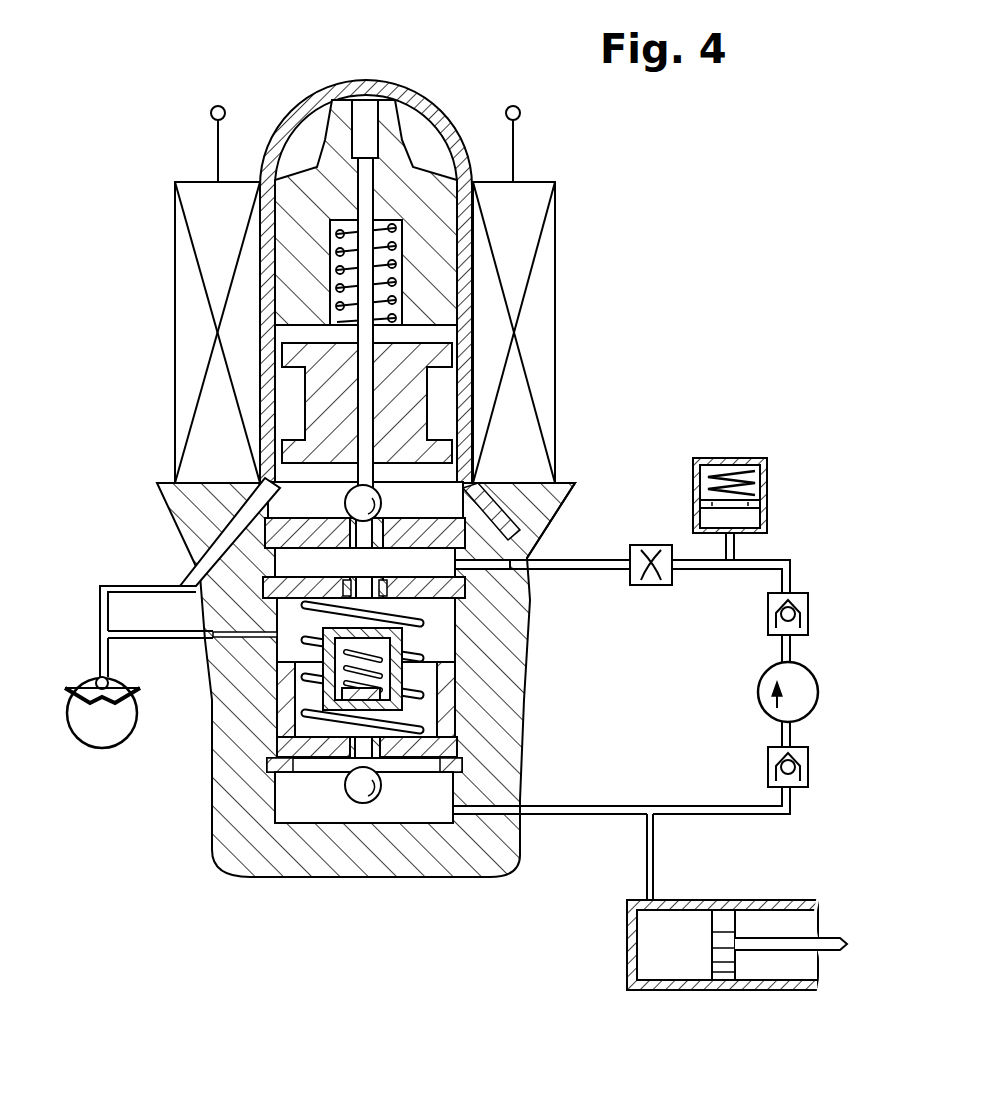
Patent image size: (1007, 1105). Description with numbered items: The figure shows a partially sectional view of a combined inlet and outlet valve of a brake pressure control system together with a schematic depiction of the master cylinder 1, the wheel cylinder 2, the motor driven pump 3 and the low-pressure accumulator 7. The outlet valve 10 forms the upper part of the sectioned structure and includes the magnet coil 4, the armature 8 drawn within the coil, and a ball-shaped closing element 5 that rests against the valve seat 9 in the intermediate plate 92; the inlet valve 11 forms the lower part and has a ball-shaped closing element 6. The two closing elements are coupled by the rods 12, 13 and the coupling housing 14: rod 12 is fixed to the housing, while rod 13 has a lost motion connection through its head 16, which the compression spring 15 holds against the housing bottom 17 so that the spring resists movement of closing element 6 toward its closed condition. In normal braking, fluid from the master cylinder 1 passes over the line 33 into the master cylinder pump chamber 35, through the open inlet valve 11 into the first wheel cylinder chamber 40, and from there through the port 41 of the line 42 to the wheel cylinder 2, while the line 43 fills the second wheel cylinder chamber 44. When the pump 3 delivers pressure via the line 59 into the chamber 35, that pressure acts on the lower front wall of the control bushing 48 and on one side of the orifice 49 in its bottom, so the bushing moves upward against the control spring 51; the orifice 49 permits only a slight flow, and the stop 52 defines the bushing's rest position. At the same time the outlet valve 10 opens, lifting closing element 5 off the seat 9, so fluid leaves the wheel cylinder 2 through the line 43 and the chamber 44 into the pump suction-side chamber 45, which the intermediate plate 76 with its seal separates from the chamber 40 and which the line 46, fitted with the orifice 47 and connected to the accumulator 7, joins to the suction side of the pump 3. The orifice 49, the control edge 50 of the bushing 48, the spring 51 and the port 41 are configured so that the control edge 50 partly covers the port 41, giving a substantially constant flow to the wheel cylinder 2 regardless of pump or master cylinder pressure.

The master cylinder 1 is at (772, 900).
The wheel cylinder 2 is at (96, 677).
The motor driven pump 3 is at (803, 703).
The magnet coil 4 is at (545, 240).
The closing element 5 is at (478, 485).
The closing element 6 is at (357, 795).
The low-pressure accumulator 7 is at (765, 470).
The armature 8 is at (410, 385).
The valve seat 9 is at (445, 515).
The outlet valve 10 is at (340, 505).
The inlet valve 11 is at (380, 768).
The rod 12 is at (197, 577).
The rod 13 is at (452, 720).
The coupling housing 14 is at (405, 672).
The compression spring 15 is at (402, 640).
The head 16 is at (395, 693).
The housing bottom 17 is at (330, 720).
The line 33 is at (655, 862).
The master cylinder pump chamber 35 is at (330, 805).
The first wheel cylinder chamber 40 is at (478, 592).
The port 41 is at (217, 660).
The line 42 is at (140, 632).
The line 43 is at (118, 585).
The second wheel cylinder chamber 44 is at (400, 497).
The pump suction-side chamber 45 is at (455, 557).
The line 46 is at (693, 572).
The orifice 47 is at (650, 583).
The control bushing 48 is at (447, 732).
The orifice 49 is at (408, 765).
The control edge 50 is at (273, 683).
The control spring 51 is at (425, 612).
The stop 52 is at (462, 765).
The line 59 is at (723, 806).
The intermediate plate 76 is at (283, 590).
The intermediate plate 92 is at (460, 537).